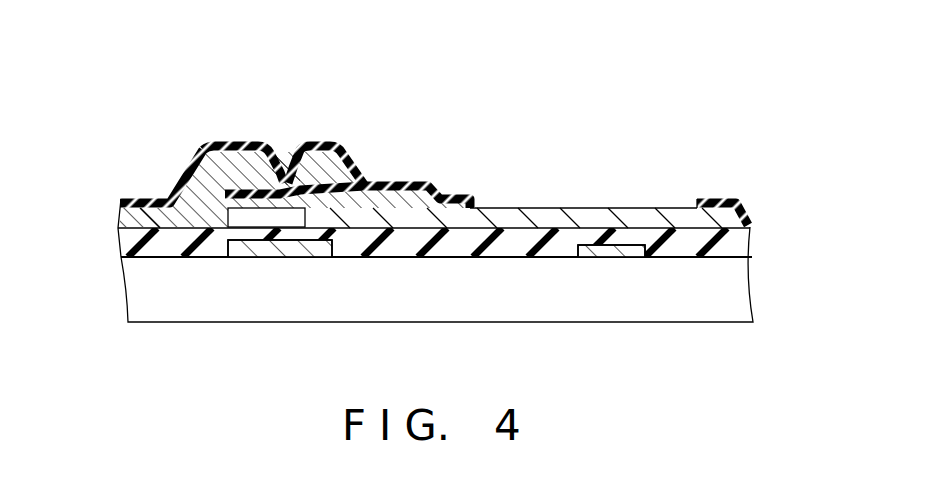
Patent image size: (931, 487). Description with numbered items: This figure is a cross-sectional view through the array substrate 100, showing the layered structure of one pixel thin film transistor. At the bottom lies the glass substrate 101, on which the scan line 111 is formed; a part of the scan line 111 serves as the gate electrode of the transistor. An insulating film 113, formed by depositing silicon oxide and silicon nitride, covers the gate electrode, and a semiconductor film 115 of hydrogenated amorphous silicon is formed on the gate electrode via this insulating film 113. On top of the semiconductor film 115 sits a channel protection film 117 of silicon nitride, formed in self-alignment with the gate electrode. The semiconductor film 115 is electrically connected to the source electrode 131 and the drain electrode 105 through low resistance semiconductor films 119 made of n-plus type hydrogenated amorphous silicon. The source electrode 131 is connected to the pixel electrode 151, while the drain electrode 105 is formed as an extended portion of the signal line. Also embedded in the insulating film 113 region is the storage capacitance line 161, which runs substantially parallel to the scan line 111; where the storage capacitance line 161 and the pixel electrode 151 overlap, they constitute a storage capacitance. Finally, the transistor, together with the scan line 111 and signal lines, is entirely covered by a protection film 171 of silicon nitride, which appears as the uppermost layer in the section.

The array substrate 100 is at (713, 138).
The glass substrate 101 is at (740, 303).
The drain electrode 105 is at (203, 150).
The scan line 111 is at (293, 252).
The insulating film 113 is at (737, 245).
The semiconductor film 115 is at (353, 180).
The channel protection film 117 is at (277, 150).
The low resistance semiconductor films 119 is at (238, 147).
The source electrode 131 is at (440, 193).
The pixel electrode 151 is at (130, 212).
The storage capacitance line 161 is at (607, 252).
The protection film 171 is at (713, 198).